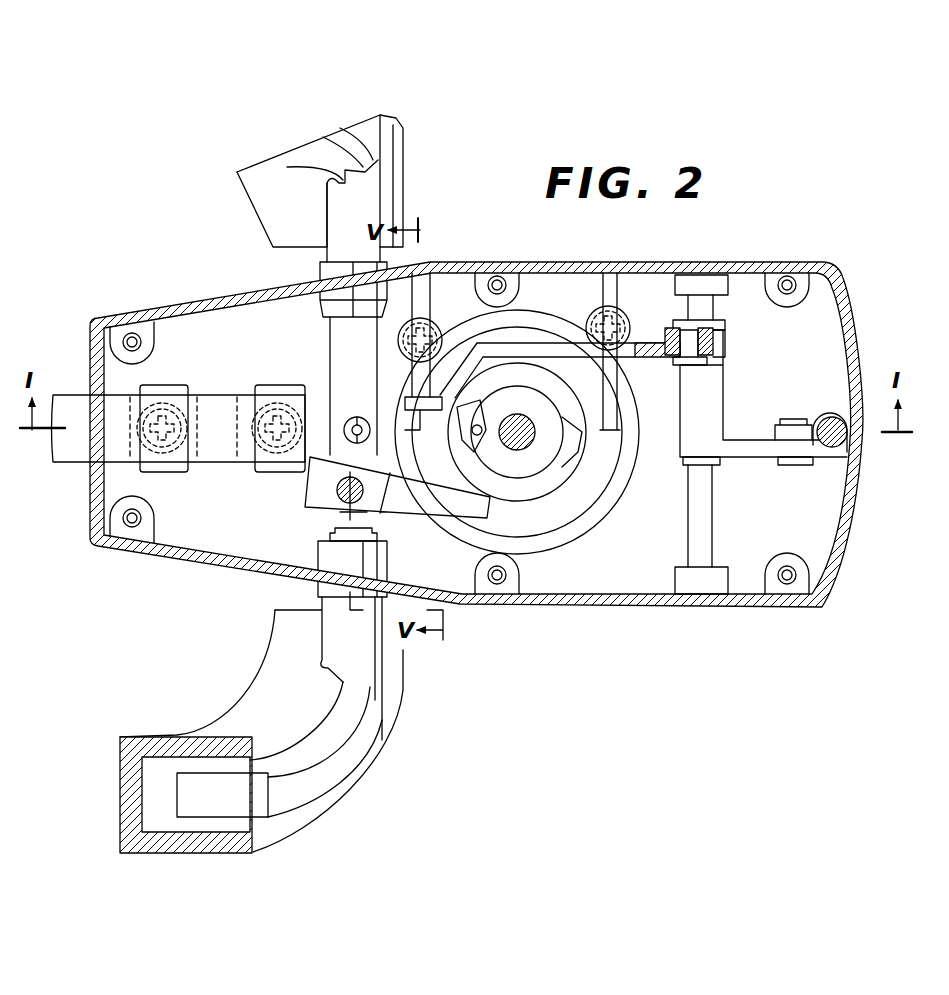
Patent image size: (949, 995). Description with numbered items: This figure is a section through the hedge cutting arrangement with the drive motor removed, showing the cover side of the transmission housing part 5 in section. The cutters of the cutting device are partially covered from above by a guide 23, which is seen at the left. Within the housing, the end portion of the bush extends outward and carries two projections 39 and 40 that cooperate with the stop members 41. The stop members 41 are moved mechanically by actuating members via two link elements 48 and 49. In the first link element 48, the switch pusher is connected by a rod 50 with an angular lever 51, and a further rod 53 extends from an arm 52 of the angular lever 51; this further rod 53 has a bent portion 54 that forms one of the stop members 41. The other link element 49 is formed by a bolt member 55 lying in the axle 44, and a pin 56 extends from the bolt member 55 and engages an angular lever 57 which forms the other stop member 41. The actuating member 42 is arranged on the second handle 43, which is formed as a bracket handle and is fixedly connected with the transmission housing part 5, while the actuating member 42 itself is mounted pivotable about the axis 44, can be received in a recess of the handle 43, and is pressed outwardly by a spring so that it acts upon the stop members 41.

The transmission housing part 5 is at (853, 507).
The guide 23 is at (70, 398).
The projection 39 is at (470, 452).
The projection 40 is at (570, 445).
The stop members 41 is at (440, 430).
The actuating member 42 is at (345, 752).
The second handle 43 is at (265, 657).
The axis 44 is at (320, 553).
The link element 48 is at (756, 434).
The link element 49 is at (297, 505).
The rod 50 is at (837, 457).
The angular lever 51 is at (708, 425).
The arm 52 is at (720, 338).
The further rod 53 is at (557, 350).
The bent portion 54 is at (480, 365).
The bolt member 55 is at (345, 346).
The pin 56 is at (338, 506).
The angular lever 57 is at (318, 482).